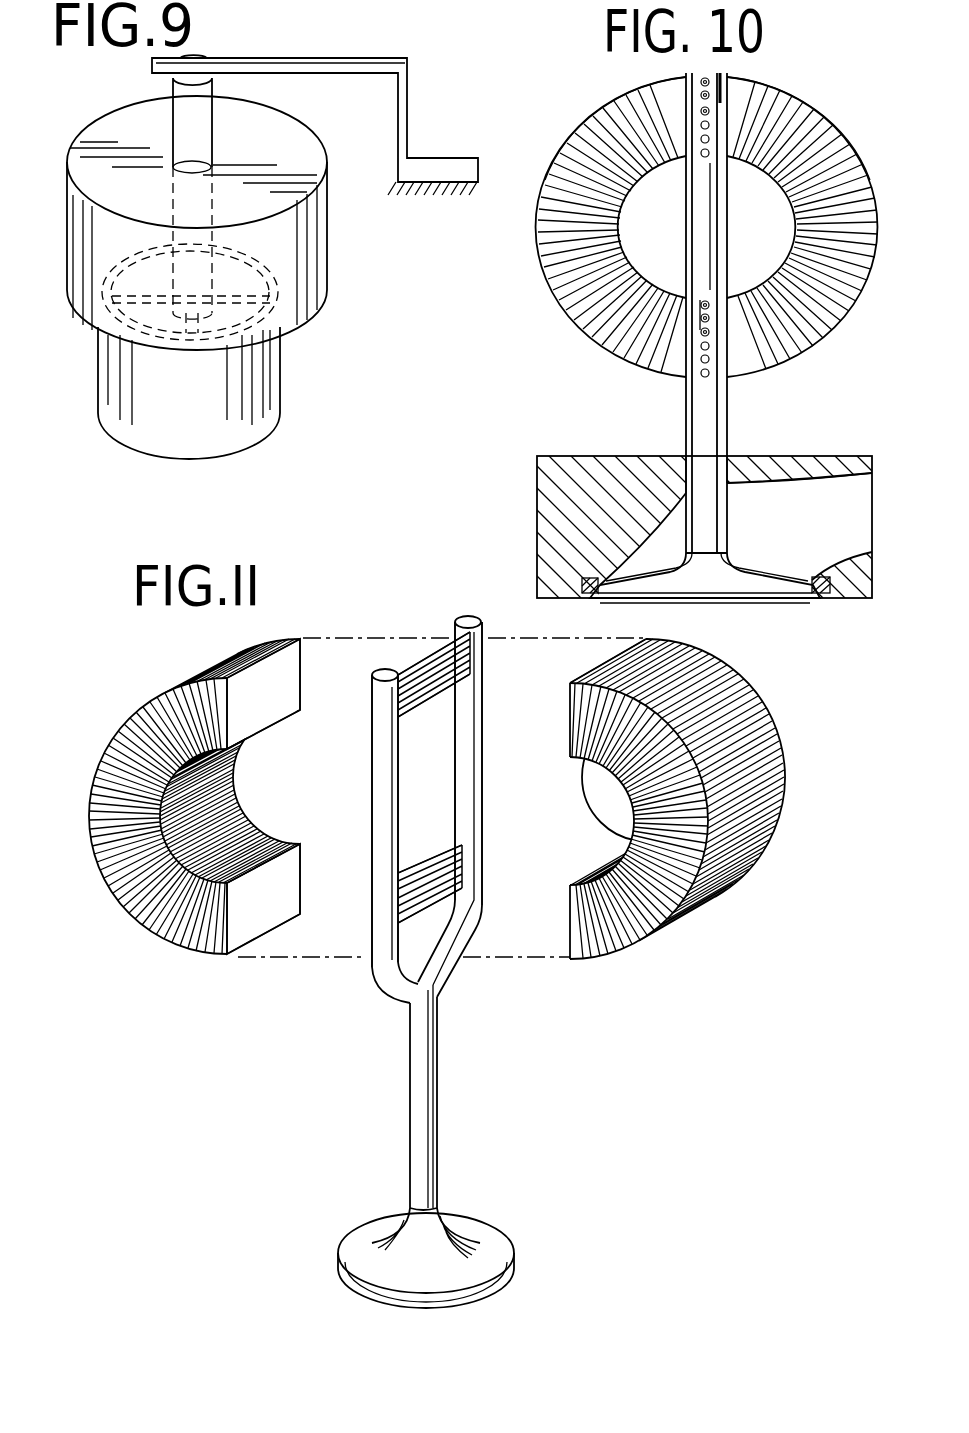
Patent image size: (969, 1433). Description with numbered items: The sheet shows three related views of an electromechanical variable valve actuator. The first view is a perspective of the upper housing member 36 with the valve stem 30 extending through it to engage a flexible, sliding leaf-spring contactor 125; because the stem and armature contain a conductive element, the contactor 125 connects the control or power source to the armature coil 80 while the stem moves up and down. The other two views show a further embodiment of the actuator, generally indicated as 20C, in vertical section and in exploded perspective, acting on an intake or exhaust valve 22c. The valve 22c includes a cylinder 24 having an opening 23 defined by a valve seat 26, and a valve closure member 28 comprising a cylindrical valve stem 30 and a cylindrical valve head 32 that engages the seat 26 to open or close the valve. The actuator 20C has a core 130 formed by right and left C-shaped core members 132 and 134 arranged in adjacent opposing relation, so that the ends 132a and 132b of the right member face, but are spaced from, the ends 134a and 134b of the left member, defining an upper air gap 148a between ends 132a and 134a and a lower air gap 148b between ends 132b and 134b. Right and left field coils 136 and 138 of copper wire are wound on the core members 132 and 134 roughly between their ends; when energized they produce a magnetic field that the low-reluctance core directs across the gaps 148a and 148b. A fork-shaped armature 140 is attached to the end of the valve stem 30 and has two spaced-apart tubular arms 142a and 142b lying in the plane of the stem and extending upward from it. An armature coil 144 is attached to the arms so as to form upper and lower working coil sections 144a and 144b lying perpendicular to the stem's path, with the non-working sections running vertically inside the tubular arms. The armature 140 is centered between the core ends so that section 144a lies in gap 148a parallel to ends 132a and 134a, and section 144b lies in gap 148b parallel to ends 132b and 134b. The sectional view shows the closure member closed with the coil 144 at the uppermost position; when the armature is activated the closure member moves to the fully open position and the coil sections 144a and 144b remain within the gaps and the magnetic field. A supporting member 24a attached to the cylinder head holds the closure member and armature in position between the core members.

In FIG. 10, the electromechanical variable valve actuator 20C is at (556, 349).
In FIG. 11, the electromechanical variable valve actuator 20C is at (141, 966).
In FIG. 10, the intake or exhaust valve 22c is at (780, 609).
In FIG. 10, the opening 23 is at (762, 562).
In FIG. 10, the cylinder 24 is at (537, 532).
In FIG. 10, the supporting member 24a is at (678, 460).
In FIG. 10, the valve seat 26 is at (603, 597).
In FIG. 10, the valve closure member 28 is at (732, 432).
In FIG. 11, the valve closure member 28 is at (442, 1162).
In FIG. 9, the valve stem 30 is at (175, 128).
In FIG. 10, the valve stem 30 is at (718, 513).
In FIG. 11, the valve stem 30 is at (422, 1187).
In FIG. 10, the valve head 32 is at (728, 602).
In FIG. 11, the valve head 32 is at (505, 1283).
In FIG. 9, the upper housing member 36 is at (70, 188).
In FIG. 9, the armature coil 80 is at (130, 395).
In FIG. 9, the flexible contactor 125 is at (328, 55).
In FIG. 10, the core 130 is at (815, 88).
In FIG. 10, the right core member 132 is at (835, 142).
In FIG. 11, the right core member 132 is at (637, 938).
In FIG. 11, the end of right core member 132a is at (570, 705).
In FIG. 11, the end of right core member 132b is at (570, 910).
In FIG. 10, the left core member 134 is at (583, 128).
In FIG. 11, the left core member 134 is at (205, 948).
In FIG. 11, the end of left core member 134a is at (290, 692).
In FIG. 11, the end of left core member 134b is at (290, 885).
In FIG. 10, the right field coil 136 is at (828, 320).
In FIG. 11, the right field coil 136 is at (730, 710).
In FIG. 10, the left field coil 138 is at (560, 285).
In FIG. 11, the left field coil 138 is at (135, 732).
In FIG. 11, the armature 140 is at (463, 612).
In FIG. 11, the tubular arm 142a is at (482, 790).
In FIG. 11, the tubular arm 142b is at (377, 792).
In FIG. 11, the armature coil 144 is at (418, 662).
In FIG. 10, the upper working coil section 144a is at (690, 75).
In FIG. 11, the upper working coil section 144a is at (428, 690).
In FIG. 10, the lower working coil section 144b is at (713, 313).
In FIG. 11, the lower working coil section 144b is at (430, 870).
In FIG. 10, the upper air gap 148a is at (715, 75).
In FIG. 10, the lower air gap 148b is at (693, 315).